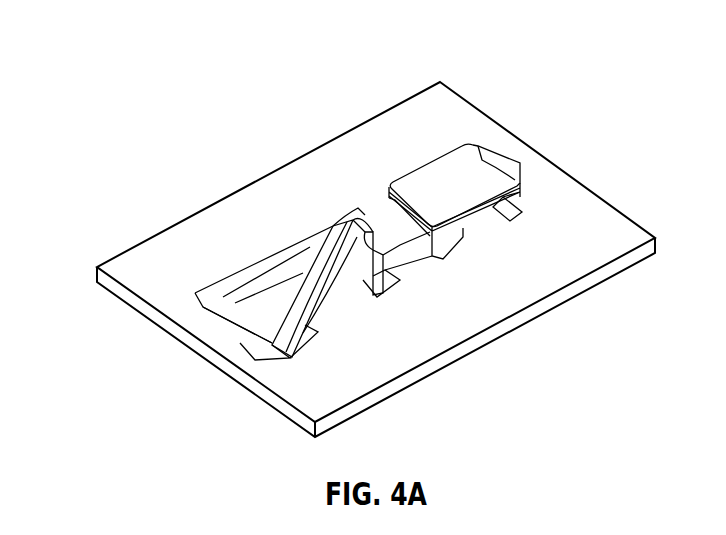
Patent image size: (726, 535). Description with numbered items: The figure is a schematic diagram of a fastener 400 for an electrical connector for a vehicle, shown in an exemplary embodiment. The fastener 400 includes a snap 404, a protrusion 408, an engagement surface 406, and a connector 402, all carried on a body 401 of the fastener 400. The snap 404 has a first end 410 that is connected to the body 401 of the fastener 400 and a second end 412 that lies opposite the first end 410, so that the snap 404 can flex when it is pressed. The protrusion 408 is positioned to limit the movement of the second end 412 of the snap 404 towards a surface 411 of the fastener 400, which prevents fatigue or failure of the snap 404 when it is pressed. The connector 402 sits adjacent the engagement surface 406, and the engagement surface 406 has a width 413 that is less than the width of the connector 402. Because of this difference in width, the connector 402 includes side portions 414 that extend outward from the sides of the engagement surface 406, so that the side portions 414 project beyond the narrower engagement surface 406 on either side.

The fastener 400 is at (388, 101).
The body 401 is at (132, 281).
The connector 402 is at (477, 175).
The snap 404 is at (260, 306).
The engagement surface 406 is at (389, 239).
The protrusion 408 is at (340, 307).
The first end 410 is at (247, 320).
The surface 411 is at (493, 107).
The second end 412 is at (323, 247).
The width 413 is at (347, 222).
The side portions 414 is at (408, 174).